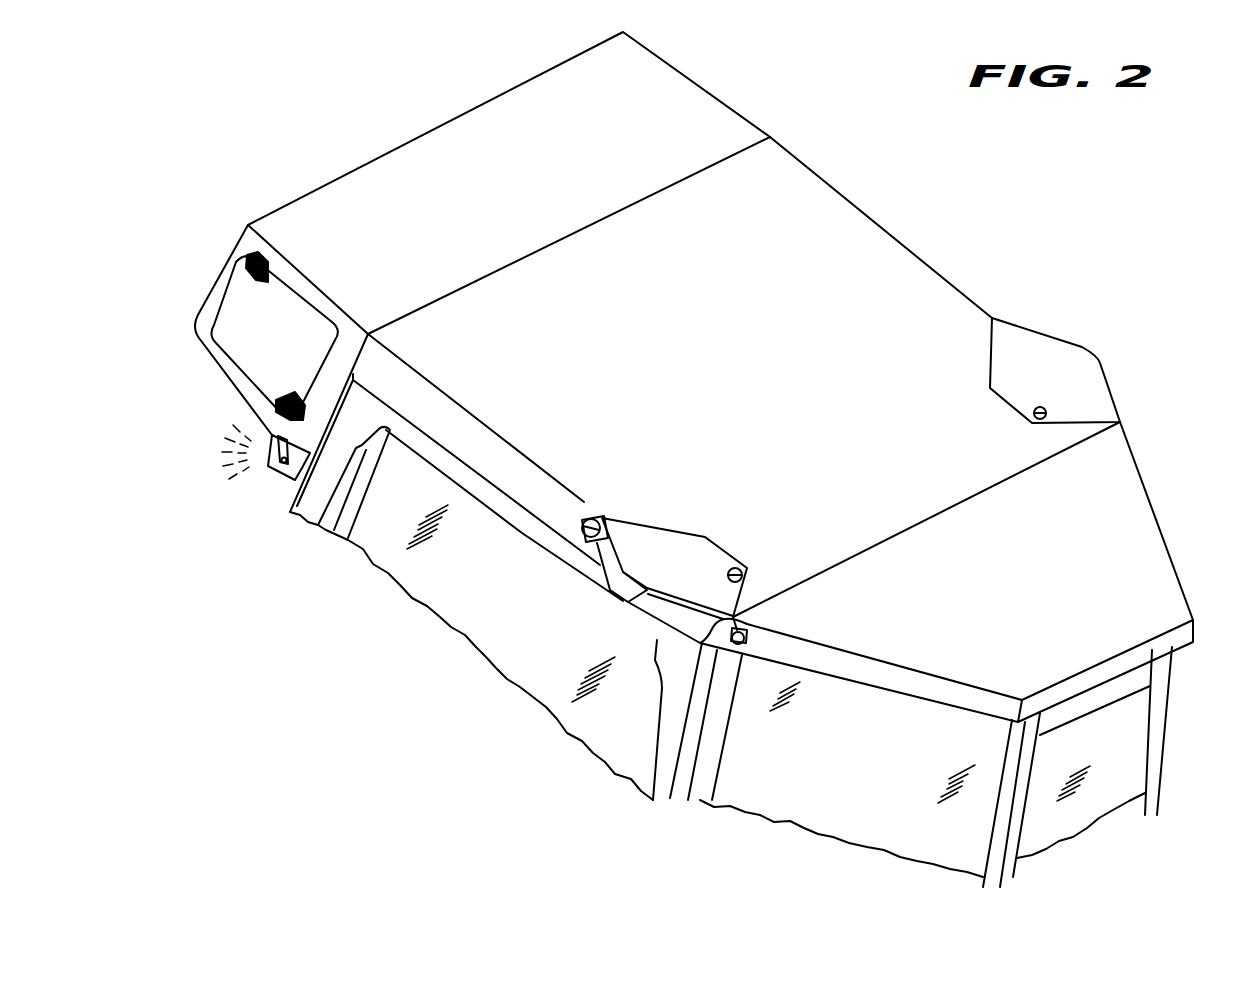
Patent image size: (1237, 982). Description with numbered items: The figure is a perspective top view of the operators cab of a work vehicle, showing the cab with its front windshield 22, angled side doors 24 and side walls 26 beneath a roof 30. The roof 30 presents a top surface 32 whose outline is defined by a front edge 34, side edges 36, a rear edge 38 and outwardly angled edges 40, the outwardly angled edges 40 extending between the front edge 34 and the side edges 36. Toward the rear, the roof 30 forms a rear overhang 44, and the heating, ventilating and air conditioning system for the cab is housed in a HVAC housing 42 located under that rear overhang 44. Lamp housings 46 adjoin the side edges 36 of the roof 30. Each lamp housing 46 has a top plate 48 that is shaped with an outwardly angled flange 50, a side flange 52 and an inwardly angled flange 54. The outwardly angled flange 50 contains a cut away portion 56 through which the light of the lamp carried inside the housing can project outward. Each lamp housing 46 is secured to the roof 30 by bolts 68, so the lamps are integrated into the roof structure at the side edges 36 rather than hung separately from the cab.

The front windshield 22 is at (1118, 753).
The angled side doors 24 is at (875, 791).
The side walls 26 is at (487, 581).
The roof 30 is at (947, 218).
The top surface 32 is at (737, 326).
The front edge 34 is at (1112, 662).
The side edges 36 is at (857, 206).
The rear edge 38 is at (508, 92).
The outwardly angled edges 40 is at (1152, 505).
The HVAC housing 42 is at (263, 355).
The rear overhang 44 is at (343, 195).
The lamp housing 46 is at (1043, 326).
The top plate 48 is at (1003, 350).
The outwardly angled flange 50 is at (736, 616).
The side flange 52 is at (622, 603).
The inwardly angled flange 54 is at (610, 567).
The cut away portion 56 is at (665, 607).
The bolts 68 is at (600, 514).